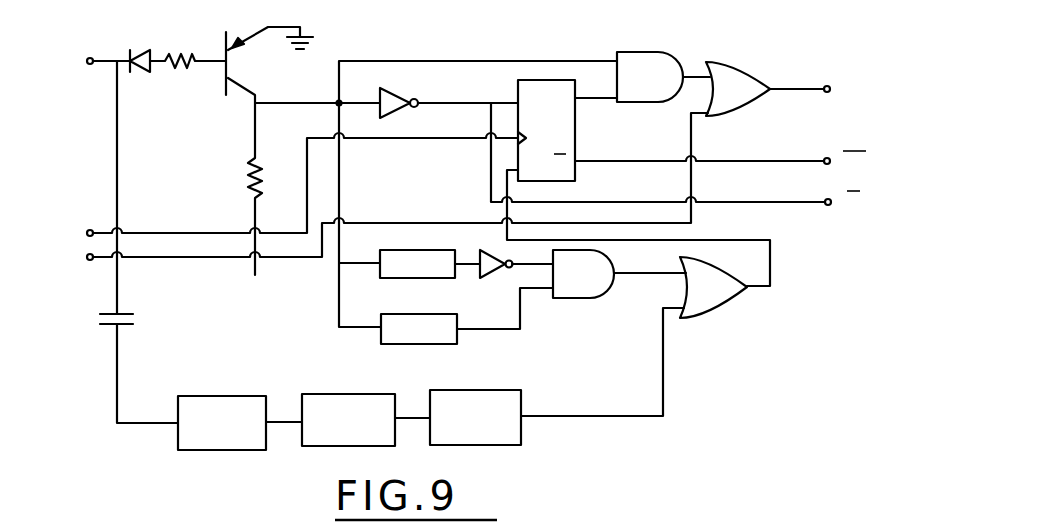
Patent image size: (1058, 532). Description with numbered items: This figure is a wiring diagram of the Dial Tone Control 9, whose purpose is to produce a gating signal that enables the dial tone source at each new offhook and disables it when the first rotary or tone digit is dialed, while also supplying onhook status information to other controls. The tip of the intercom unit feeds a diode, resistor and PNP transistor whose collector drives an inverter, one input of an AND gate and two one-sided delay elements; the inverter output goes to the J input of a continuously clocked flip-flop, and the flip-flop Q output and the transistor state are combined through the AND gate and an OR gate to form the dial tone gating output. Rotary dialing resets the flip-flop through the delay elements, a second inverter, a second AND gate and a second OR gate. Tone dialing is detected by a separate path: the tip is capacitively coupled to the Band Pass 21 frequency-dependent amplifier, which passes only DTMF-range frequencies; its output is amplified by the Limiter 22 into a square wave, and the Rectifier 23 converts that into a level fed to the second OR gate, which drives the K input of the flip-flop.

The dial tone control 9 is at (483, 257).
The band pass 21 is at (206, 394).
The limiter 22 is at (312, 446).
The rectifier 23 is at (518, 440).